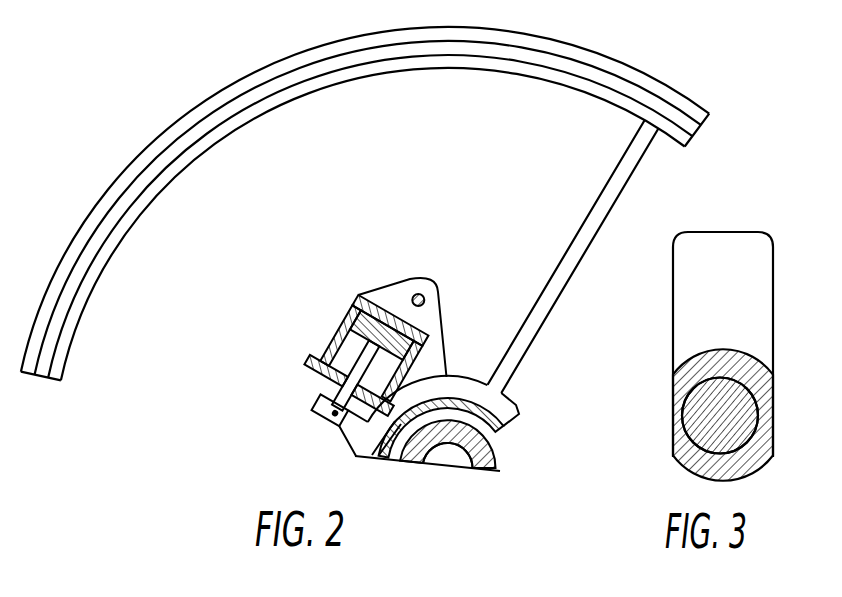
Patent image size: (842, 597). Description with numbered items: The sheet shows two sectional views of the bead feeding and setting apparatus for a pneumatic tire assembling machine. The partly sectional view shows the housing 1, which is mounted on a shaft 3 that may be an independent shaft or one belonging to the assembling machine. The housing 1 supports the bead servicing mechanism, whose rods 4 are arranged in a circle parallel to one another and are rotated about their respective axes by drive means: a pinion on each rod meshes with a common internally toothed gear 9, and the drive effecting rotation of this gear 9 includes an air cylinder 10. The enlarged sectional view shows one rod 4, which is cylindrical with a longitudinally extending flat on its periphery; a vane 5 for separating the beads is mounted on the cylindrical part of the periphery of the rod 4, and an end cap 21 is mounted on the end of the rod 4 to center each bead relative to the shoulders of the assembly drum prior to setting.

In FIG. 2, the internally toothed gear 9 is at (676, 100).
In FIG. 2, the housing 1 is at (479, 456).
In FIG. 2, the shaft 3 is at (453, 462).
In FIG. 2, the air cylinder 10 is at (338, 341).
In FIG. 3, the vane 5 is at (735, 252).
In FIG. 3, the end cap 21 is at (760, 387).
In FIG. 3, the rod 4 is at (737, 440).